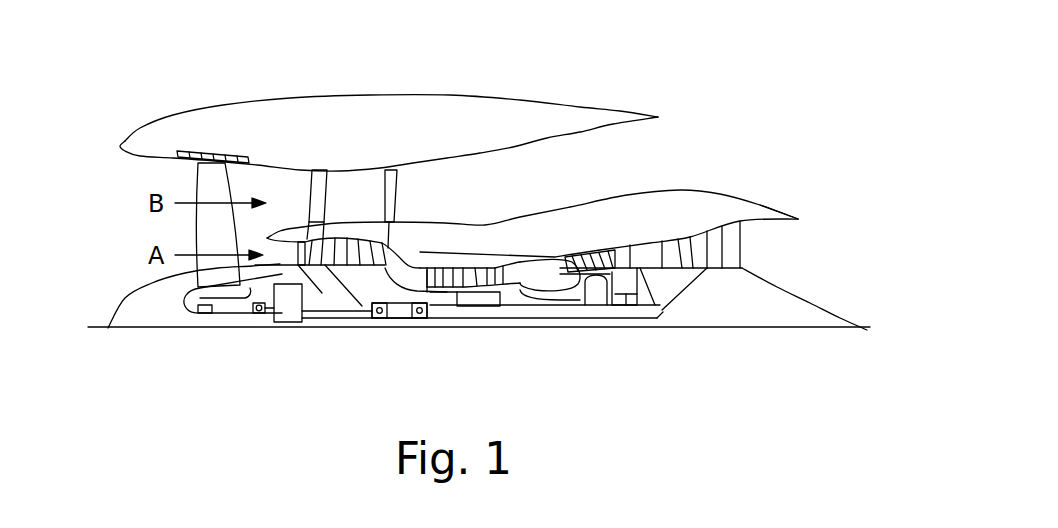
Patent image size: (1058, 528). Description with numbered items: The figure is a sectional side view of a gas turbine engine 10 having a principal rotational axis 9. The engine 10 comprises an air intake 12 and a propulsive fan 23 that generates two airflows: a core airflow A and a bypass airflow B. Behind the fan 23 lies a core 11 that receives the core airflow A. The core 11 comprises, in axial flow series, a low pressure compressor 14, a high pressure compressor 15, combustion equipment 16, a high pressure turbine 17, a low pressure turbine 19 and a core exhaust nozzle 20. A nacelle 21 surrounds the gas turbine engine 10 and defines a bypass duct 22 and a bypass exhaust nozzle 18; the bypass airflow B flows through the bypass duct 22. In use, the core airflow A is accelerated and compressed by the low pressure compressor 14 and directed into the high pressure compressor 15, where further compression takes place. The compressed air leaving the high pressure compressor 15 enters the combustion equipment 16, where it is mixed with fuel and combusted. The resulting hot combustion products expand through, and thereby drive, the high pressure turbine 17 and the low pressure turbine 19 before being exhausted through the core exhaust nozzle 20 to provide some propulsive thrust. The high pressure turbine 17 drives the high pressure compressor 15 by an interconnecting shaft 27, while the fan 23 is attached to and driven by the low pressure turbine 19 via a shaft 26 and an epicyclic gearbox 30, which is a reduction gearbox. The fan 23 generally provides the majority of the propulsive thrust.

The principal rotational axis 9 is at (765, 328).
The gas turbine engine 10 is at (174, 113).
The core 11 is at (555, 247).
The air intake 12 is at (133, 178).
The low pressure compressor 14 is at (348, 250).
The high pressure compressor 15 is at (478, 277).
The combustion equipment 16 is at (541, 277).
The high pressure turbine 17 is at (600, 253).
The bypass exhaust nozzle 18 is at (748, 113).
The low pressure turbine 19 is at (712, 268).
The core exhaust nozzle 20 is at (798, 253).
The nacelle 21 is at (399, 107).
The bypass duct 22 is at (633, 154).
The propulsive fan 23 is at (205, 239).
The shaft 26 is at (447, 317).
The interconnecting shaft 27 is at (505, 307).
The epicyclic gearbox 30 is at (289, 312).